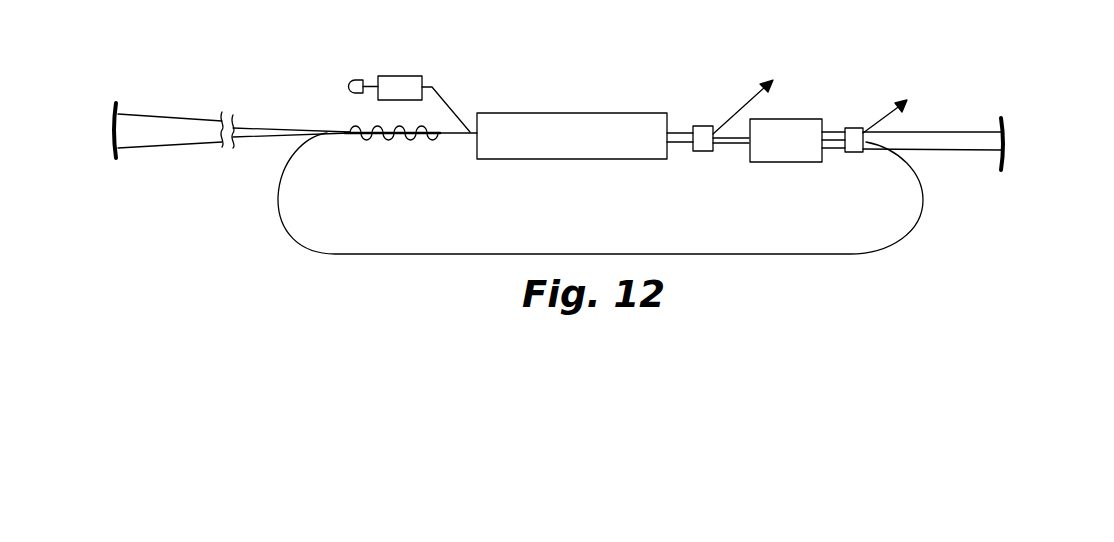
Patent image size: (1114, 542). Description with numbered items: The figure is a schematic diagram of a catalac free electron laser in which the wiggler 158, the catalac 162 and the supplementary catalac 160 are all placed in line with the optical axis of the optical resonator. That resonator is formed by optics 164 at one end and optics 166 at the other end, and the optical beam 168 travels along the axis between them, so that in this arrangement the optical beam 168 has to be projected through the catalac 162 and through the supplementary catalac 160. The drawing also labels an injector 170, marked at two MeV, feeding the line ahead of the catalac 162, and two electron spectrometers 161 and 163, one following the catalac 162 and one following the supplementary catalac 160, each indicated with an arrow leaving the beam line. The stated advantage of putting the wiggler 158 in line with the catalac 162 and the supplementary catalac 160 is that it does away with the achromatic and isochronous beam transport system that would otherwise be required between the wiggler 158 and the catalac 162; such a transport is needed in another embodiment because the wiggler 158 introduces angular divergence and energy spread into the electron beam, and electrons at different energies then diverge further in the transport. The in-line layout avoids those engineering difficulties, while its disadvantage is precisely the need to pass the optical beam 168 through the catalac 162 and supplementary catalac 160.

The wiggler 158 is at (380, 137).
The supplementary catalac 160 is at (777, 163).
The electron spectrometer 161 is at (703, 152).
The catalac 162 is at (546, 114).
The electron spectrometer 163 is at (855, 152).
The optics 164 is at (110, 158).
The optics 166 is at (1005, 156).
The optical beam 168 is at (257, 125).
The injector 170 is at (378, 77).